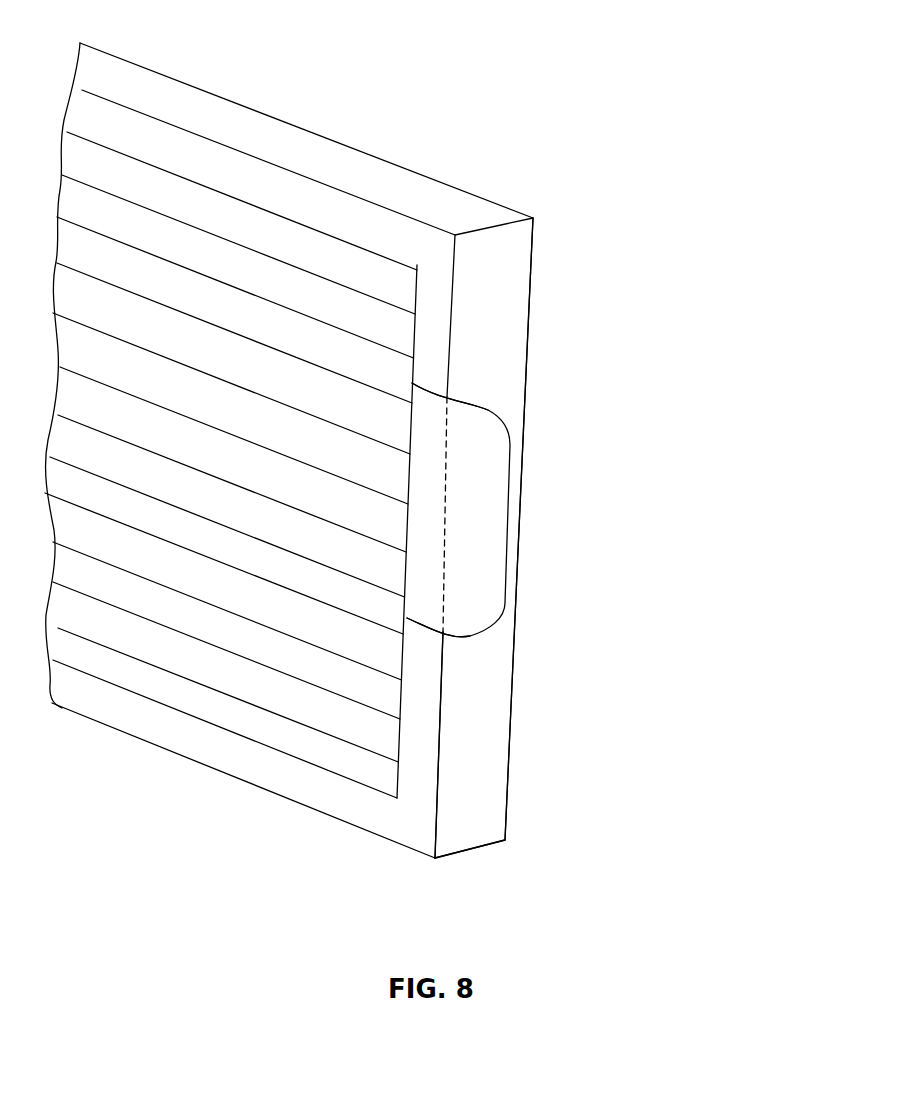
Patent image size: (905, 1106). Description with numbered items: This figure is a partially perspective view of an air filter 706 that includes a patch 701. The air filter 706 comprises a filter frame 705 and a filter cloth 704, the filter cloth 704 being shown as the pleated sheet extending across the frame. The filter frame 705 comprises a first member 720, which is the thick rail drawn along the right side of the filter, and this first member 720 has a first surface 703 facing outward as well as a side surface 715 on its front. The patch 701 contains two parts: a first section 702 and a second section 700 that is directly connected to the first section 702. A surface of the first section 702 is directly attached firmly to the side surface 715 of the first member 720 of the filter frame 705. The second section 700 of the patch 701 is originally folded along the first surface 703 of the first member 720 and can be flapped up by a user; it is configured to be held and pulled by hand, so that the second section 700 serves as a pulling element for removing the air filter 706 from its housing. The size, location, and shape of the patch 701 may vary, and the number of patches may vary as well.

The air filter 706 is at (422, 138).
The first surface 703 is at (503, 297).
The first section 702 is at (432, 408).
The second section 700 is at (497, 477).
The patch 701 is at (463, 640).
The filter cloth 704 is at (125, 672).
The filter frame 705 is at (203, 765).
The first member 720 is at (490, 782).
The side surface 715 is at (422, 772).